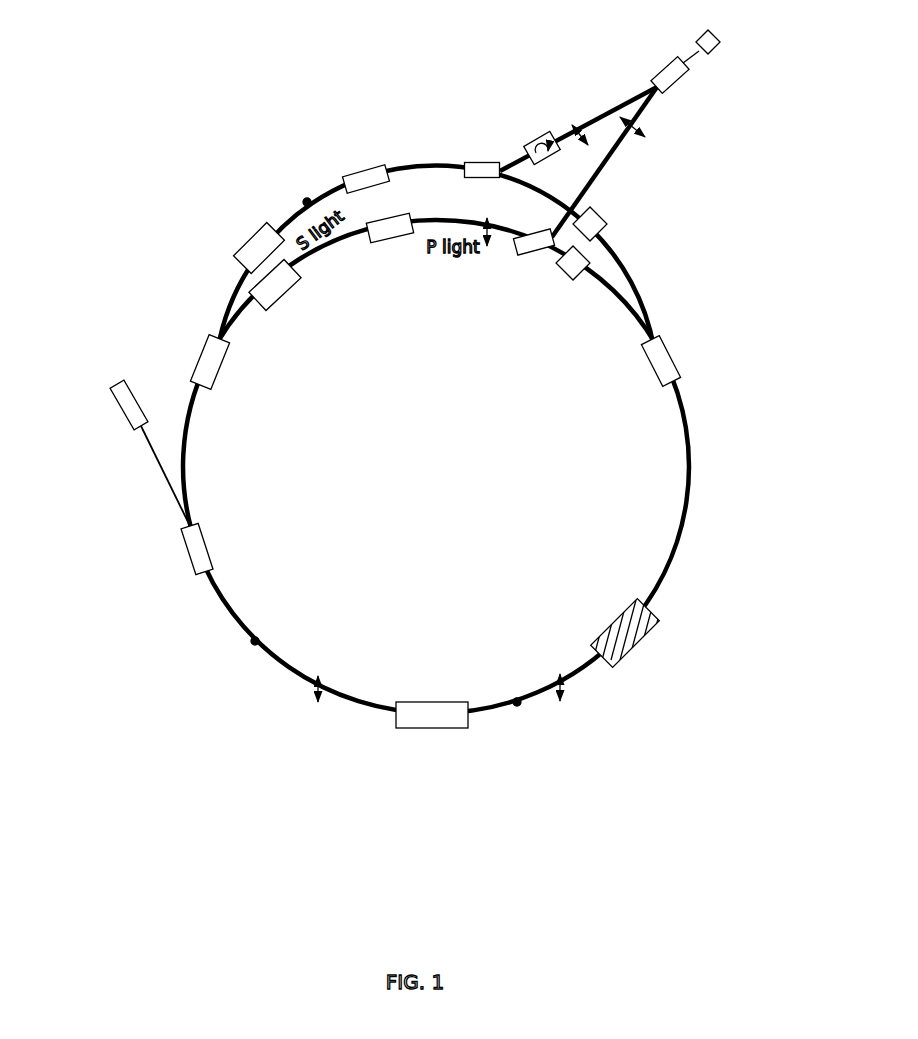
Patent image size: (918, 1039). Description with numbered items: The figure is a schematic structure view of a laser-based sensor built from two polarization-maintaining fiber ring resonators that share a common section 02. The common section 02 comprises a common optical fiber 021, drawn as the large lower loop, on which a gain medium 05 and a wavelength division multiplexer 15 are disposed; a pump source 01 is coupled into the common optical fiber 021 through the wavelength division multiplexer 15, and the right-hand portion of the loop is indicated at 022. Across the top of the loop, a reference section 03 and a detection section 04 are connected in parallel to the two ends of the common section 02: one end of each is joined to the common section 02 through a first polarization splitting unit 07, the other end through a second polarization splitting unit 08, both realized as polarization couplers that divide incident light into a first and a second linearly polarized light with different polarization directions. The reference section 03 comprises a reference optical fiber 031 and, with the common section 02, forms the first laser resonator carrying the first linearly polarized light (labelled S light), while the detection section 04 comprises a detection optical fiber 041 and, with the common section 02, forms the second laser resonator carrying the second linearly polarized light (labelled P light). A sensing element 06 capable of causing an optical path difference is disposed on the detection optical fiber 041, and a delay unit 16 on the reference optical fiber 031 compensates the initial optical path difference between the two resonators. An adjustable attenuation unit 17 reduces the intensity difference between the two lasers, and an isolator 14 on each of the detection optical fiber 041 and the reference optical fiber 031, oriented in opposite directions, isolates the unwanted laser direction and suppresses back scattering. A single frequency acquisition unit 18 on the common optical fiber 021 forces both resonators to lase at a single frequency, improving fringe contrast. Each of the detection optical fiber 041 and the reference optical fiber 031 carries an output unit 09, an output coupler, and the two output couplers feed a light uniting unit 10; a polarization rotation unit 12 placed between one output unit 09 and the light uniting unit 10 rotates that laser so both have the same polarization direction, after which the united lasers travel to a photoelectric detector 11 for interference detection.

The pump source 01 is at (116, 400).
The common section 02 is at (602, 689).
The common optical fiber 021 is at (280, 668).
The second fiber segment of loop 022 is at (688, 497).
The reference section 03 is at (618, 271).
The reference optical fiber 031 is at (224, 316).
The detection section 04 is at (560, 188).
The detection optical fiber 041 is at (283, 221).
The gain medium 05 is at (468, 728).
The sensing element 06 is at (382, 168).
The first polarization splitting unit 07 is at (200, 357).
The second polarization splitting unit 08 is at (673, 362).
The output unit 09 is at (527, 236).
The light uniting unit 10 is at (682, 77).
The photoelectric detector 11 is at (720, 42).
The polarization rotation unit 12 is at (549, 133).
The isolator 14 is at (604, 223).
The wavelength division multiplexer 15 is at (195, 573).
The delay unit 16 is at (366, 222).
The adjustable attenuation unit 17 is at (230, 320).
The single frequency acquisition unit 18 is at (662, 620).